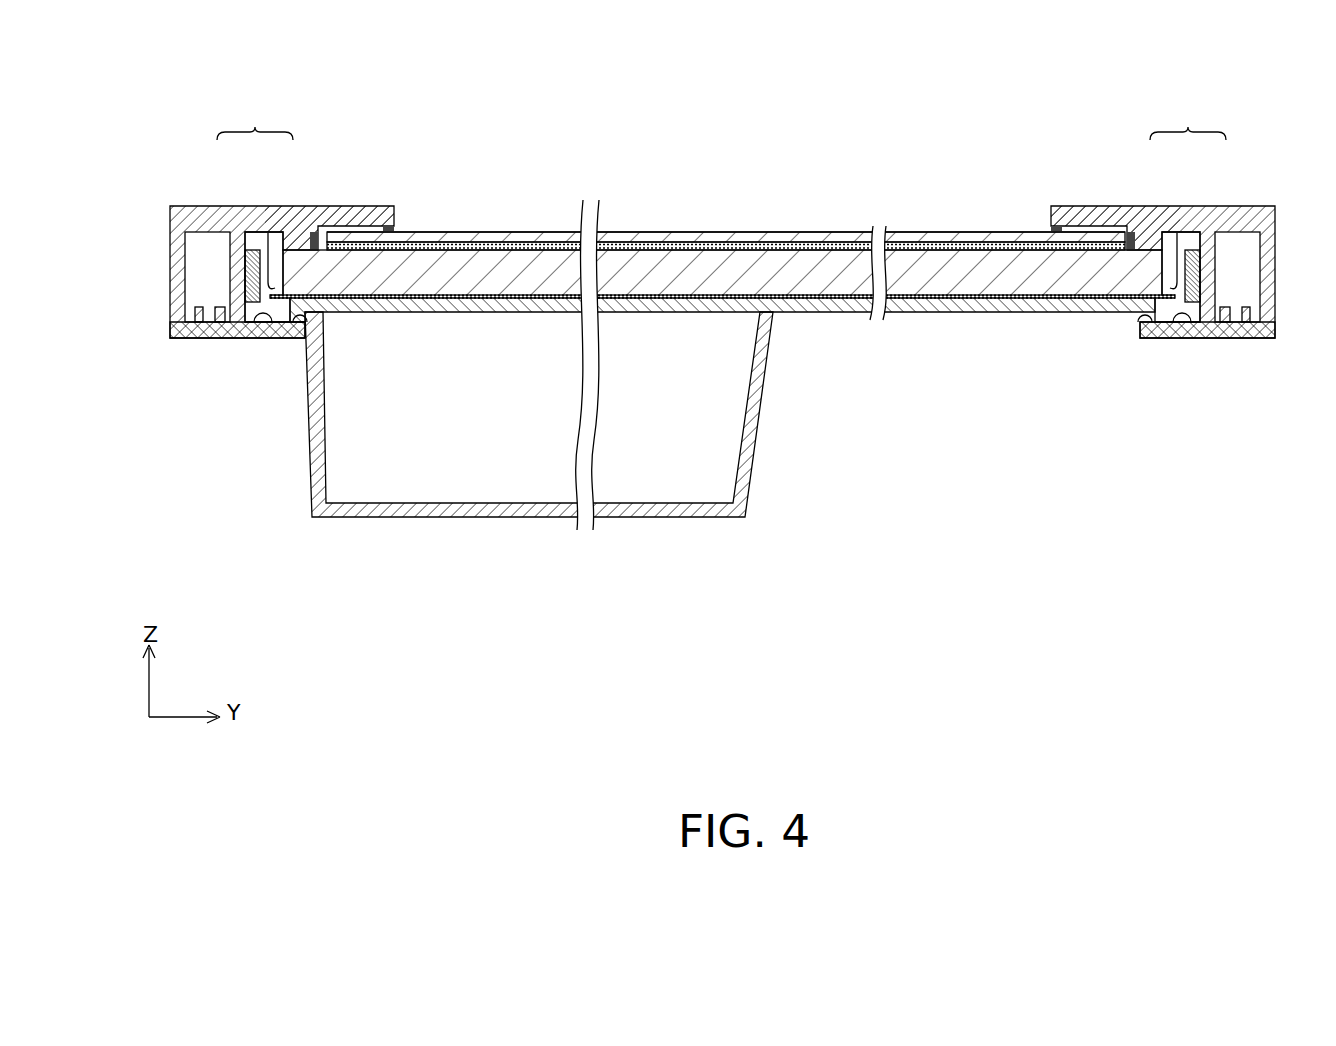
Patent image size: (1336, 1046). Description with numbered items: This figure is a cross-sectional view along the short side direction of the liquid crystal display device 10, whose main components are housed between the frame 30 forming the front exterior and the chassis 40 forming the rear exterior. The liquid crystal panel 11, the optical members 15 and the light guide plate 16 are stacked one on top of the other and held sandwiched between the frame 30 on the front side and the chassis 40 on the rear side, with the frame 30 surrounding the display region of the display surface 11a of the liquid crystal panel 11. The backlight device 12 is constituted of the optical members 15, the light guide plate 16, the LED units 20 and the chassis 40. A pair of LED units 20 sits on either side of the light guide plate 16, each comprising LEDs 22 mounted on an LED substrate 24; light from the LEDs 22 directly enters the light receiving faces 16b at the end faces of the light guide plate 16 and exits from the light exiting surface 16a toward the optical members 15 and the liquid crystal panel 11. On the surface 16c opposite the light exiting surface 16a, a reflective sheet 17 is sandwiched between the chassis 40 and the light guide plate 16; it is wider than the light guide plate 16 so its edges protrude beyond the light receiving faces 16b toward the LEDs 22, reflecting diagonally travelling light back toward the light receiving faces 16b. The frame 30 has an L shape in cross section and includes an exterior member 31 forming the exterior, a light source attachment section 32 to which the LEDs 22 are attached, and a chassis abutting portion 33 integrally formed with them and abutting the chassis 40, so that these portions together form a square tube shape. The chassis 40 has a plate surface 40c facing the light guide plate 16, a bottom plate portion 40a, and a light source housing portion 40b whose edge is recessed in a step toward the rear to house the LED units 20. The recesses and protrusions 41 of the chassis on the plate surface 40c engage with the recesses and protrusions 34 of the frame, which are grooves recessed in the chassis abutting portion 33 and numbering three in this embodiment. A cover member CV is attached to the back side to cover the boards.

The liquid crystal display device 10 is at (691, 143).
The liquid crystal panel 11 is at (640, 232).
The display surface 11a is at (690, 242).
The backlight device 12 is at (962, 393).
The optical members 15 is at (738, 249).
The light guide plate 16 is at (834, 273).
The light exiting surface 16a is at (931, 297).
The light receiving face 16b is at (283, 262).
The surface opposite to the light exiting surface 16c is at (1007, 300).
The reflective sheet 17 is at (971, 292).
The LED unit 20 is at (721, 122).
The LED 22 is at (273, 245).
The LED substrate 24 is at (247, 252).
The frame 30 is at (345, 218).
The exterior member 31 is at (205, 222).
The light source attachment section 32 is at (238, 277).
The chassis abutting portion 33 is at (228, 295).
The recesses and protrusions of the frame 34 is at (198, 312).
The chassis 40 is at (893, 305).
The bottom plate portion 40a is at (793, 305).
The light source housing portion 40b is at (262, 324).
The plate surface 40c is at (308, 316).
The recesses and protrusions of the chassis 41 is at (207, 312).
The cover member CV is at (478, 520).